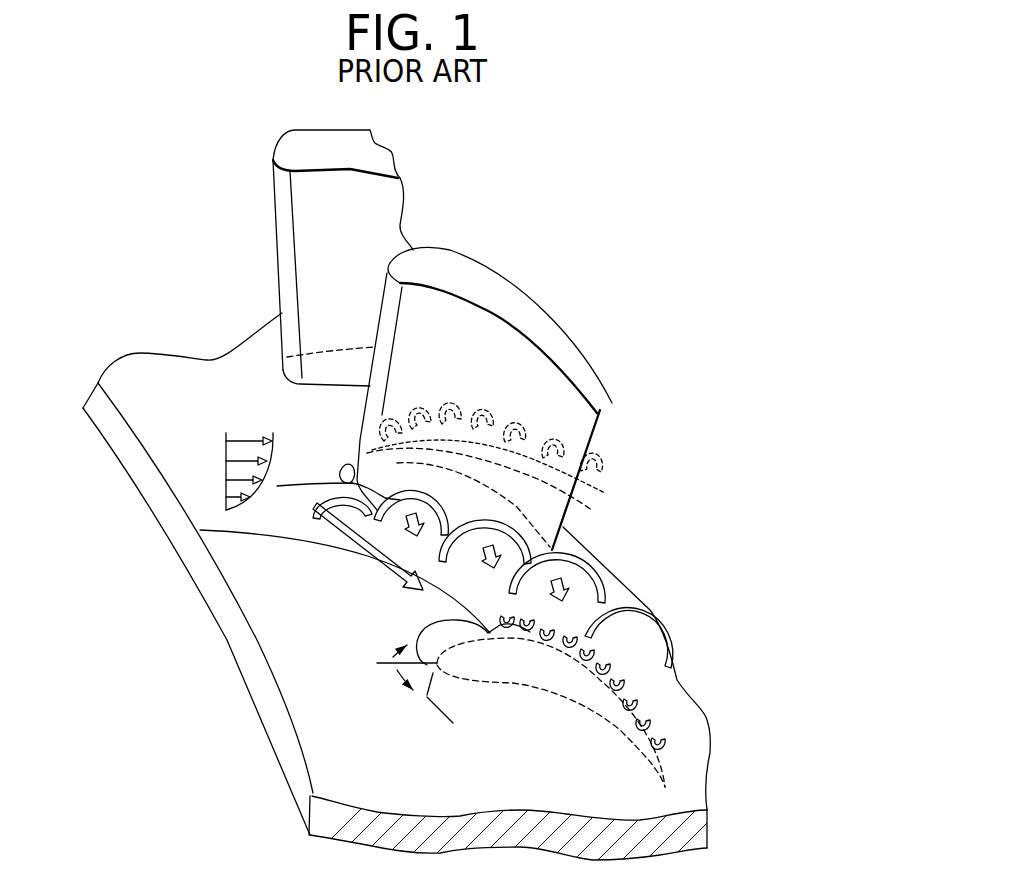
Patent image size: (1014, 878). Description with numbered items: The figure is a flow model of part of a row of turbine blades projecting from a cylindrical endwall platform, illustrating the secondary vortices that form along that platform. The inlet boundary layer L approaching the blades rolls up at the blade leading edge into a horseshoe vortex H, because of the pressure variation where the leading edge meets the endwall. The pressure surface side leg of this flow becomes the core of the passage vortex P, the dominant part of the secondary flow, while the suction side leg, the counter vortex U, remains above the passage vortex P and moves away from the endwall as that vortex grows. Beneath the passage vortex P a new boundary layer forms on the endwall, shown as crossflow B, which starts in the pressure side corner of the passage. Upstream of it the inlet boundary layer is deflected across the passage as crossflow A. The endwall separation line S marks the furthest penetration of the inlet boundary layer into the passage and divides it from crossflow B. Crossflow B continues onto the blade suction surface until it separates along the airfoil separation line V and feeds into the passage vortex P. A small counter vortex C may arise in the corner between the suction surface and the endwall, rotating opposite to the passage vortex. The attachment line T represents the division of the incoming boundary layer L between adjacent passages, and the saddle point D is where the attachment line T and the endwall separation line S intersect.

The inlet boundary layer L is at (236, 432).
The counter vortex U is at (416, 411).
The horseshoe vortex H is at (366, 481).
The passage vortex P is at (455, 505).
The airfoil separation line V is at (541, 481).
The crossflow B is at (572, 586).
The crossflow A is at (318, 548).
The endwall separation line S is at (411, 629).
The attachment line T is at (378, 666).
The saddle point D is at (419, 712).
The counter vortex C is at (621, 715).